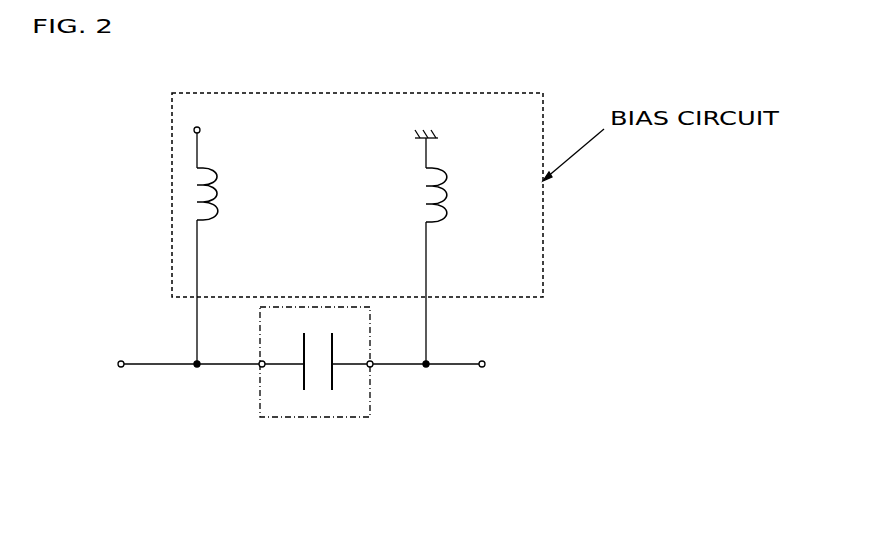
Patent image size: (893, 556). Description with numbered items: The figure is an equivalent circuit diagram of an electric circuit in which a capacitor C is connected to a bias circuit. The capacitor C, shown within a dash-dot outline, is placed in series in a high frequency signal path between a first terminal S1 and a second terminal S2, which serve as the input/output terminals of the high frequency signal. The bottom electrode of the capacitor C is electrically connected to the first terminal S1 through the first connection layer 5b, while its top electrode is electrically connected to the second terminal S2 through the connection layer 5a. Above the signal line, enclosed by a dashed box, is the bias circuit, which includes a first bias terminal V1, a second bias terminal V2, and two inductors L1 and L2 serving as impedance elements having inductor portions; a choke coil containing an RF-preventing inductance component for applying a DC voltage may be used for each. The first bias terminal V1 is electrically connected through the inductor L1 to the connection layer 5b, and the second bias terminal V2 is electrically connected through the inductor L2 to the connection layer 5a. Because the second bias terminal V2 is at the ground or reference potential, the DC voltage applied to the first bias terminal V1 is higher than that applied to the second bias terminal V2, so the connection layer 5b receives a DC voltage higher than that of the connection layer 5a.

The first bias terminal V1 is at (206, 131).
The second bias terminal V2 is at (455, 145).
The inductor L1 is at (237, 267).
The inductor L2 is at (460, 267).
The first terminal S1 is at (180, 366).
The second terminal S2 is at (433, 366).
The connection layer 5a is at (374, 366).
The first connection layer 5b is at (258, 365).
The capacitor C is at (366, 419).